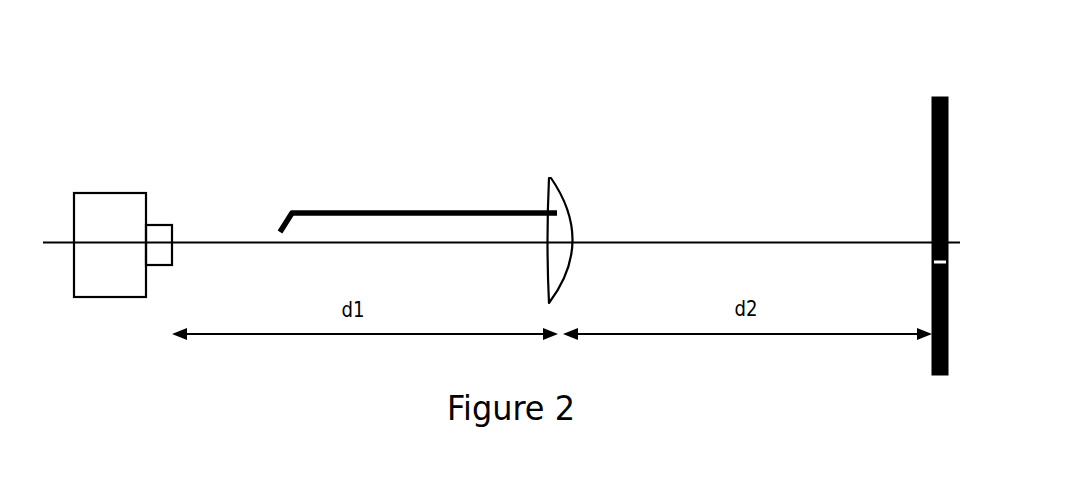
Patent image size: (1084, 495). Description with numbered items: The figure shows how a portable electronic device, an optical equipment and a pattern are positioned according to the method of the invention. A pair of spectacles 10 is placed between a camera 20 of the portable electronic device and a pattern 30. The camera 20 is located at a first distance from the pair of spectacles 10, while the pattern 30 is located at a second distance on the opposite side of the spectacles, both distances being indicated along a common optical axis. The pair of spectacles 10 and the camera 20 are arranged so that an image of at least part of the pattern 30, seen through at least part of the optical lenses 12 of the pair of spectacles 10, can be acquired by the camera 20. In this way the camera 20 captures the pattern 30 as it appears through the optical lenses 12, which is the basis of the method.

The camera 20 is at (128, 186).
The pair of spectacles 10 is at (418, 175).
The optical lenses 12 is at (560, 200).
The pattern 30 is at (915, 155).